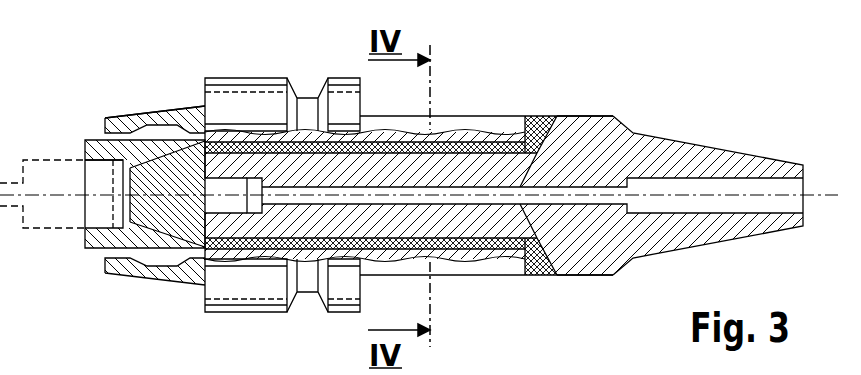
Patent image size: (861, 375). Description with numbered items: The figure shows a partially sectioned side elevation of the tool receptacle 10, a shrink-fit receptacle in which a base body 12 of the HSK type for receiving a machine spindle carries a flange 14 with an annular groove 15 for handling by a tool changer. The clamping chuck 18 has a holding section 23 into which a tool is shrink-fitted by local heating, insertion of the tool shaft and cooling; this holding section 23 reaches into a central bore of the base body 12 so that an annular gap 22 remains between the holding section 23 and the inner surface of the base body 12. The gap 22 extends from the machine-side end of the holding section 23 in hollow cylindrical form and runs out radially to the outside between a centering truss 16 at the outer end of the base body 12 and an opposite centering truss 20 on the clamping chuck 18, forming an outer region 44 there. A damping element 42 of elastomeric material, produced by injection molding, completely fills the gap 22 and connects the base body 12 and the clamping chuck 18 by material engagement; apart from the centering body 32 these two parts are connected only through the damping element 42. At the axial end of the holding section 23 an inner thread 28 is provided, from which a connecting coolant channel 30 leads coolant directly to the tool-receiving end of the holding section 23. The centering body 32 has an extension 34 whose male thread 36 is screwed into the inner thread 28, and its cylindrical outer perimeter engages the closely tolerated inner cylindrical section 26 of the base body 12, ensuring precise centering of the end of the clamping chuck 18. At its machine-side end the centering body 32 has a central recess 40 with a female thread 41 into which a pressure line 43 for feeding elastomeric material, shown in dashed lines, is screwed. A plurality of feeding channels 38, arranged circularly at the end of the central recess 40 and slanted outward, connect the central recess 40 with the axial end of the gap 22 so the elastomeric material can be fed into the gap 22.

The tool receptacle 10 is at (647, 122).
The base body 12 is at (187, 101).
The flange 14 is at (246, 90).
The annular groove 15 is at (304, 292).
The centering truss 16 is at (512, 125).
The clamping chuck 18 is at (590, 281).
The centering truss 20 is at (603, 132).
The annular gap 22 is at (442, 132).
The holding section 23 is at (480, 160).
The inner cylindrical section 26 is at (137, 131).
The inner thread 28 is at (258, 214).
The coolant channel 30 is at (565, 187).
The centering body 32 is at (127, 262).
The extension 34 is at (224, 270).
The male thread 36 is at (213, 92).
The feeding channels 38 is at (176, 252).
The central recess 40 is at (88, 214).
The female thread 41 is at (101, 140).
The damping element 42 is at (464, 259).
The pressure line 43 is at (47, 170).
The outer region 44 is at (538, 270).